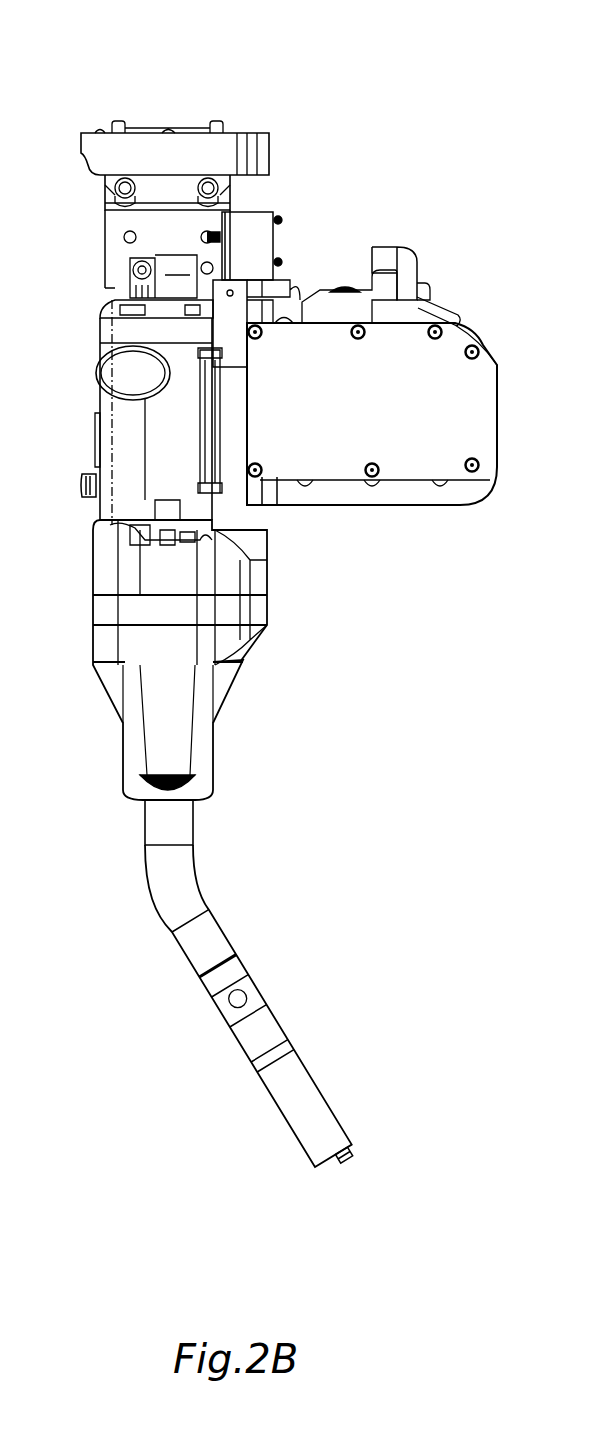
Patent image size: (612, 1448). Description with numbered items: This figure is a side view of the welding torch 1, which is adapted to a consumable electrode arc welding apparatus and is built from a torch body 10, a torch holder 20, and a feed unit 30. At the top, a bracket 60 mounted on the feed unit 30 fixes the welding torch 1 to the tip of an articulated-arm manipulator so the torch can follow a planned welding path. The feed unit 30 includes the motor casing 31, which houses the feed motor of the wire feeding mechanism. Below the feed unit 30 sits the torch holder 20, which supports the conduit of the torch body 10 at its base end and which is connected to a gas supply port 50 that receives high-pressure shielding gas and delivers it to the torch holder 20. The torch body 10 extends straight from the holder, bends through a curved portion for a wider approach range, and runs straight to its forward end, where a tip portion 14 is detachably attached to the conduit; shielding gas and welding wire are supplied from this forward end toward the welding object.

The welding torch 1 is at (241, 107).
The bracket 60 is at (133, 145).
The motor casing 31 is at (410, 460).
The feed unit 30 is at (112, 410).
The gas supply pipe or port 50 is at (82, 480).
The torch holder 20 is at (108, 640).
The torch body 10 is at (222, 930).
The tip portion 14 is at (348, 1153).